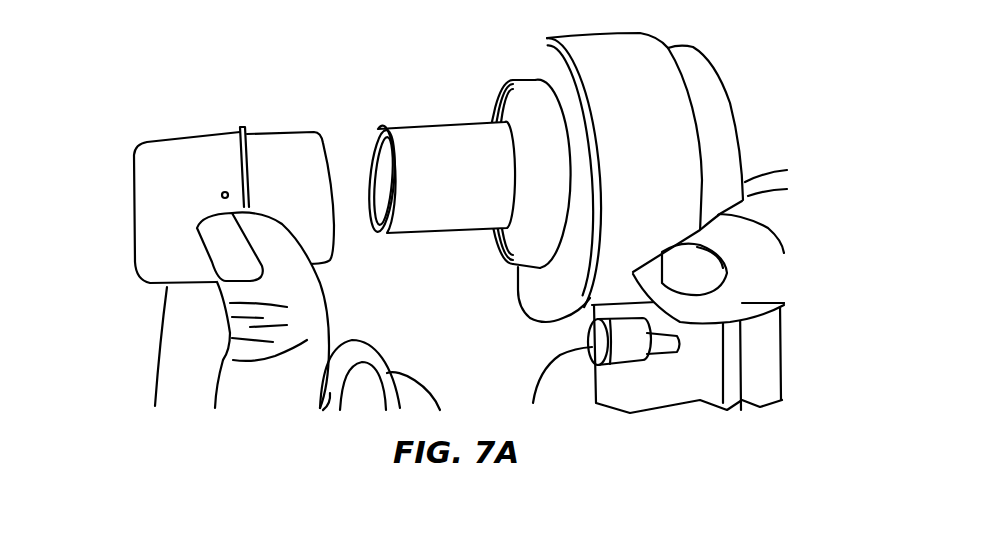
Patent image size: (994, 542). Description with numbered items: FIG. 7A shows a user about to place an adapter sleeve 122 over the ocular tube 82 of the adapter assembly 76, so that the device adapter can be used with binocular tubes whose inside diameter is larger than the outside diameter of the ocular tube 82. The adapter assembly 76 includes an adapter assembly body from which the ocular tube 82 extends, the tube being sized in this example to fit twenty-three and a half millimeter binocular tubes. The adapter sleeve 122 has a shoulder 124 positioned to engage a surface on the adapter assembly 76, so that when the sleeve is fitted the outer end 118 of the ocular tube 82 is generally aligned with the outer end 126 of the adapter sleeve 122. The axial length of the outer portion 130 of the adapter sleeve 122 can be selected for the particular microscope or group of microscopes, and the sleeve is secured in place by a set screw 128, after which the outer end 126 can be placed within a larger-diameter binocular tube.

The adapter assembly 76 is at (720, 54).
The ocular tube 82 is at (457, 138).
The outer end of ocular tube 118 is at (387, 234).
The adapter sleeve 122 is at (179, 133).
The shoulder 124 is at (240, 127).
The outer end of adapter sleeve 126 is at (133, 257).
The set screw 128 is at (220, 195).
The outer portion of adapter sleeve 130 is at (170, 263).